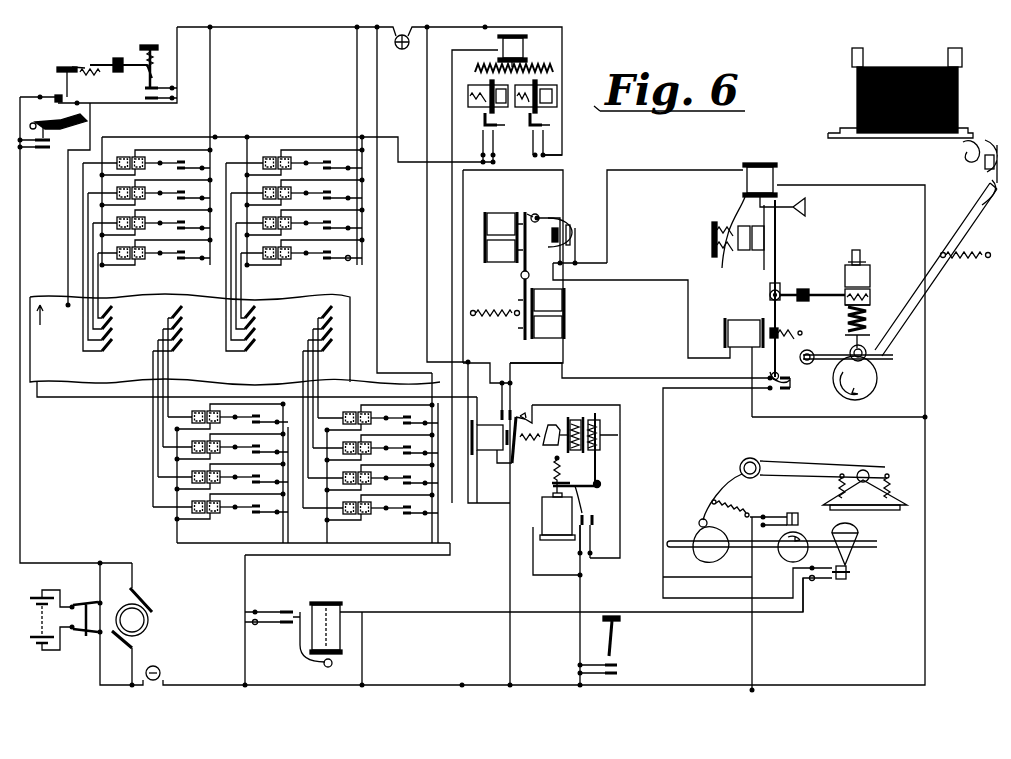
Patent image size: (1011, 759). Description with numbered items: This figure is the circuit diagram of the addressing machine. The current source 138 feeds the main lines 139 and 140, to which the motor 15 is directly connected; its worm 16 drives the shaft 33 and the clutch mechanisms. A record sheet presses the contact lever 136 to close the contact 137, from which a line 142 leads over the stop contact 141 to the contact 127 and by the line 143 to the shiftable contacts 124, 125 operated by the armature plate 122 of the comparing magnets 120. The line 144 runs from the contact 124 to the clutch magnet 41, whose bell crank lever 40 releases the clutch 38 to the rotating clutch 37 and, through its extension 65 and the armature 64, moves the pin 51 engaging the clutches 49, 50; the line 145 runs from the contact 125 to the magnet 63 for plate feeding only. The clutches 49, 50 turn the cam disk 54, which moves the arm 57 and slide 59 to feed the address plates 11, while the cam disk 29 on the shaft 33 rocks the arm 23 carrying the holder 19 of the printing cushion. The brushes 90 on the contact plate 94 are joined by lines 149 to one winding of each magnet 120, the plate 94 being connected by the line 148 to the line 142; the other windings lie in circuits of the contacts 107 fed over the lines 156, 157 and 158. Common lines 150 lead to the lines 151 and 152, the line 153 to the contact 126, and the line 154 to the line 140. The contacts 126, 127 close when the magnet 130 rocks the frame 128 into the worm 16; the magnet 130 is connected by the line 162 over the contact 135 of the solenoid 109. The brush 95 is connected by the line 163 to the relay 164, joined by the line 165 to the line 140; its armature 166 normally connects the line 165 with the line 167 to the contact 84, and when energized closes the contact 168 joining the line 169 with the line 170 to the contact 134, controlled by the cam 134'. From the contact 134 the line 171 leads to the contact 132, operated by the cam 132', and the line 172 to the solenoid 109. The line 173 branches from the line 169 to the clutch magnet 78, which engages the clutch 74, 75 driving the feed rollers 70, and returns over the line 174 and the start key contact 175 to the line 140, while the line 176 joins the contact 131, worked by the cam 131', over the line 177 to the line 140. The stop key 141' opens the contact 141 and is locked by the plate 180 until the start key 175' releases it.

The address plate 11 is at (900, 93).
The motor 15 is at (145, 624).
The worm 16 is at (530, 68).
The holder 19 is at (880, 506).
The arm 23 is at (802, 467).
The cam disk 29 is at (700, 557).
The shaft 33 is at (683, 540).
The clutch 37 is at (777, 261).
The clutch 38 is at (738, 236).
The bell crank lever 40 is at (795, 213).
The magnet 41 is at (773, 181).
The clutch 49 is at (872, 276).
The clutch 50 is at (872, 297).
The pin 51 is at (830, 289).
The cam disk 54 is at (838, 381).
The arm 57 is at (933, 275).
The slide 59 is at (972, 172).
The magnet 63 is at (742, 328).
The armature 64 is at (778, 319).
The spring 65 is at (780, 290).
The feed rollers 70 is at (553, 425).
The clutch 74 is at (600, 418).
The clutch 75 is at (574, 418).
The electromagnet 78 is at (545, 515).
The contact 84 is at (593, 521).
The analyzing brushes 90 is at (110, 318).
The contact plate 94 is at (108, 380).
The analyzing brush 95 is at (52, 317).
The contact 107 is at (320, 165).
The solenoid 109 is at (326, 604).
The comparing magnets 120 is at (142, 158).
The armature plate 122 is at (522, 288).
The contact 124 is at (560, 234).
The contact 125 is at (545, 211).
The contact 126 is at (490, 130).
The contact 127 is at (548, 137).
The frame 128 is at (557, 94).
The magnet 130 is at (498, 52).
The contact 131 is at (779, 527).
The cam 131' is at (794, 589).
The contact 132 is at (849, 584).
The cam 132' is at (863, 548).
The contact 134 is at (803, 397).
The cam 134' is at (779, 396).
The contact 135 is at (290, 608).
The contact lever 136 is at (56, 119).
The contact 137 is at (40, 154).
The current source 138 is at (40, 646).
The main line 139 is at (21, 476).
The main line 140 is at (197, 684).
The stop contact 141 is at (97, 66).
The stop key 141' is at (58, 65).
The line 142 is at (576, 53).
The line 143 is at (565, 176).
The line 144 is at (655, 172).
The line 145 is at (662, 280).
The line 148 is at (68, 220).
The lines 149 is at (240, 290).
The common lines 150 is at (102, 145).
The common line 151 is at (231, 137).
The common line 152 is at (413, 548).
The common line 153 is at (388, 138).
The line 154 is at (463, 288).
The line 156 is at (213, 58).
The line 157 is at (357, 62).
The line 158 is at (378, 226).
The line 162 is at (370, 558).
The line 163 is at (68, 398).
The relay 164 is at (487, 452).
The line 165 is at (510, 578).
The armature 166 is at (514, 452).
The line 167 is at (620, 460).
The contact 168 is at (509, 410).
The line 169 is at (427, 252).
The line 170 is at (620, 378).
The line 171 is at (663, 515).
The line 172 is at (430, 613).
The line 173 is at (487, 506).
The line 174 is at (578, 630).
The start key contact 175 is at (380, 378).
The start key 175' is at (398, 339).
The line 176 is at (617, 580).
The line 177 is at (755, 665).
The plate 180 is at (80, 62).